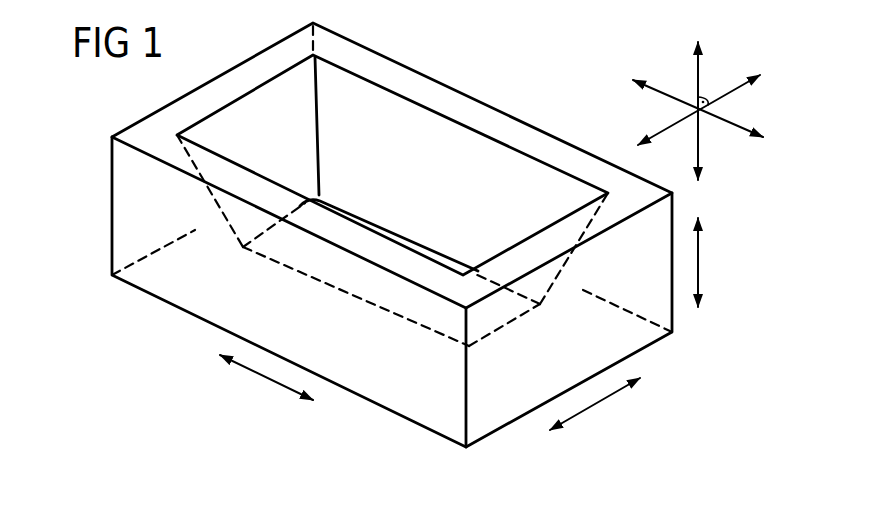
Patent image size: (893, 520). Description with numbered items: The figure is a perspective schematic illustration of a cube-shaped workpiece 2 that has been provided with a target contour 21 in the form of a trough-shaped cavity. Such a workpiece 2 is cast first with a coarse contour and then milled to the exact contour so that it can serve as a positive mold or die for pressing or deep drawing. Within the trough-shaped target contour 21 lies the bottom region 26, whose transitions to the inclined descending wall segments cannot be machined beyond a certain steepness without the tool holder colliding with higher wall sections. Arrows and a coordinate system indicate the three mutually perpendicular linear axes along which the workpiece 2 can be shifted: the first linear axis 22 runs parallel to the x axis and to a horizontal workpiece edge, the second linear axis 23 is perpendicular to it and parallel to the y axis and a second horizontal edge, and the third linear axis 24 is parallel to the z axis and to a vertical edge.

The workpiece 2 is at (132, 205).
The target contour 21 is at (465, 147).
The bottom region 26 is at (343, 213).
The first linear axis 22 is at (262, 378).
The second linear axis 23 is at (597, 405).
The third linear axis 24 is at (699, 258).